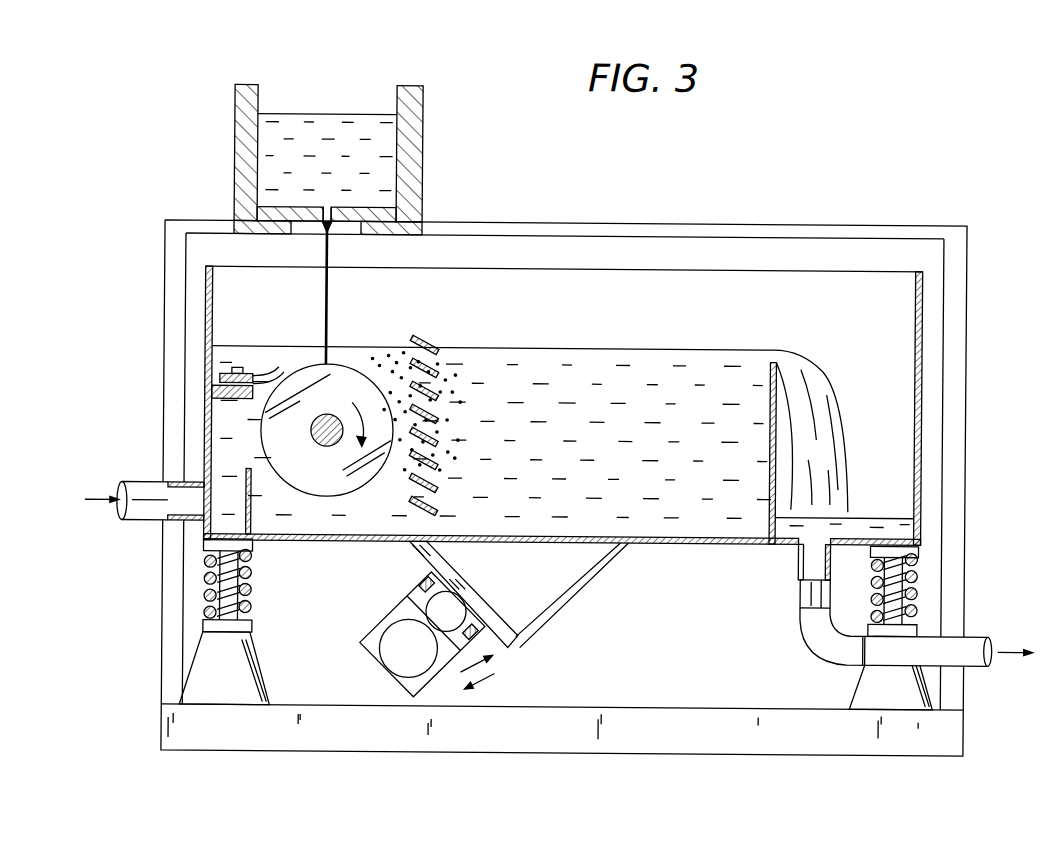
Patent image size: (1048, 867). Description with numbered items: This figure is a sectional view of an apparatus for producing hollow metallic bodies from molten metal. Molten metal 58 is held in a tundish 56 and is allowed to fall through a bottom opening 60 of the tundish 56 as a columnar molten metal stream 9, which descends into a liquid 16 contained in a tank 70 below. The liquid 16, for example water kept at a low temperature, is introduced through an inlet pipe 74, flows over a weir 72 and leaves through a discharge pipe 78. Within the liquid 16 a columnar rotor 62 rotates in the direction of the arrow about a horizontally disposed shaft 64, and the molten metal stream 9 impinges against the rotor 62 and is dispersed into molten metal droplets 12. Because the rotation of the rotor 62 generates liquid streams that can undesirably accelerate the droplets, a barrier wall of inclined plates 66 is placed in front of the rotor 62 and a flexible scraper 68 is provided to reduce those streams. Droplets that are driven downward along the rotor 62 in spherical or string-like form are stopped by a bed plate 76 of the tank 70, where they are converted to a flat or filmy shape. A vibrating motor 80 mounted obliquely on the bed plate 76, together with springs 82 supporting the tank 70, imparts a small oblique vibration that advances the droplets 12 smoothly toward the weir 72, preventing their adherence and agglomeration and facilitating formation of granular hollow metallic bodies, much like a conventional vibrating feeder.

The molten metal stream 9 is at (328, 252).
The molten metal droplets 12 is at (396, 361).
The liquid 16 is at (678, 363).
The tundish 56 is at (418, 137).
The molten metal 58 is at (374, 124).
The bottom opening 60 is at (329, 209).
The columnar rotor 62 is at (352, 480).
The shaft 64 is at (318, 448).
The inclined plates 66 is at (432, 346).
The flexible scraper 68 is at (277, 375).
The tank 70 is at (826, 284).
The weir 72 is at (768, 500).
The inlet pipe 74 is at (146, 513).
The bed plate 76 is at (640, 542).
The discharge pipe 78 is at (801, 597).
The vibrating motor 80 is at (376, 657).
The springs 82 is at (252, 605).